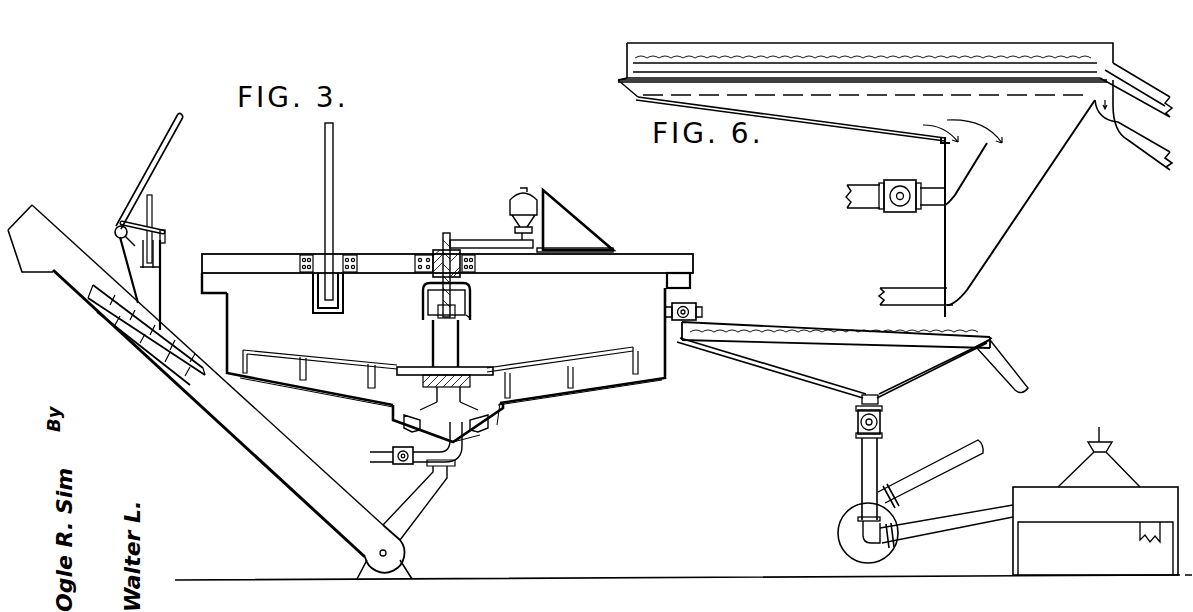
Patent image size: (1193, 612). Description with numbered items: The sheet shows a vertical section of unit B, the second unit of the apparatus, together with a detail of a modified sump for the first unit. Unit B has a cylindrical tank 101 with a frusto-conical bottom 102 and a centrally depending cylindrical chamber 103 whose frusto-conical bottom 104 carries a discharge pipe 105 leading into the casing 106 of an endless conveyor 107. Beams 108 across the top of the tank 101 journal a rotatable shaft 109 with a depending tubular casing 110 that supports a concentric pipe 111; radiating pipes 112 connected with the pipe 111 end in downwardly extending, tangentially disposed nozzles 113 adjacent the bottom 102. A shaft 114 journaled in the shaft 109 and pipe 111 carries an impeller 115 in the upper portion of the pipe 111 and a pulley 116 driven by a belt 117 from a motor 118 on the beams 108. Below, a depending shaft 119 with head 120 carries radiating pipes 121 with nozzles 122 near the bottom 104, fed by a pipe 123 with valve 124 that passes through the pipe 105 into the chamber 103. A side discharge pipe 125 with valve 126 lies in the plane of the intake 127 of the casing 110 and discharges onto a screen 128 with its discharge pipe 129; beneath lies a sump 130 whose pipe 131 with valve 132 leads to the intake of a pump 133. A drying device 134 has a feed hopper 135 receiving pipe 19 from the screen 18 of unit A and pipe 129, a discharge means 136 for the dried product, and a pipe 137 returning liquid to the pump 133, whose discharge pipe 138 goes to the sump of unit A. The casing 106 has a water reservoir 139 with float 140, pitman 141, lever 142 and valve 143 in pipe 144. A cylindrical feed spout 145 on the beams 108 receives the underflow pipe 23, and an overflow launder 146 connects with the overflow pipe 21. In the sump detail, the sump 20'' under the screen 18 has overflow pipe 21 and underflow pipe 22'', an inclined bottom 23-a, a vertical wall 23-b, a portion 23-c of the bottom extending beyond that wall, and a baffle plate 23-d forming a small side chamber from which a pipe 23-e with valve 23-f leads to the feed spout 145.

In FIG. 6, the screen 18 is at (882, 58).
In FIG. 6, the discharge pipe 19 is at (1147, 85).
In FIG. 6, the overflow discharge pipe 21 is at (1138, 143).
In FIG. 6, the sump 20'' is at (1021, 202).
In FIG. 6, the underflow discharge pipe 22'' is at (895, 297).
In FIG. 6, the downwardly inclined bottom 23-a is at (830, 122).
In FIG. 6, the vertical wall 23-b is at (943, 155).
In FIG. 6, the extending portion of the bottom 23-c is at (962, 141).
In FIG. 6, the baffle plate 23-d is at (973, 175).
In FIG. 6, the pipe 23-e is at (848, 193).
In FIG. 6, the valve 23-f is at (900, 212).
In FIG. 3, the underflow pipe 23 is at (323, 160).
In FIG. 3, the unit B is at (411, 197).
In FIG. 3, the cylindrical tank 101 is at (446, 346).
In FIG. 3, the frusto-conical bottom 102 is at (602, 390).
In FIG. 3, the depending cylindrical chamber 103 is at (500, 413).
In FIG. 3, the frusto-conical bottom 104 is at (480, 435).
In FIG. 3, the discharge pipe 105 is at (450, 483).
In FIG. 3, the casing 106 is at (263, 463).
In FIG. 3, the endless conveyor 107 is at (157, 367).
In FIG. 3, the beams 108 is at (640, 255).
In FIG. 3, the rotatable shaft 109 is at (462, 283).
In FIG. 3, the depending tubular casing 110 is at (427, 307).
In FIG. 3, the depending concentric pipe 111 is at (433, 340).
In FIG. 3, the radiating pipes 112 is at (553, 362).
In FIG. 3, the nozzles 113 is at (368, 383).
In FIG. 3, the shaft 114 is at (445, 232).
In FIG. 3, the impeller 115 is at (446, 320).
In FIG. 3, the pulley 116 is at (440, 240).
In FIG. 3, the belt 117 is at (482, 240).
In FIG. 3, the motor 118 is at (523, 190).
In FIG. 3, the depending shaft 119 is at (460, 393).
In FIG. 3, the head 120 is at (427, 402).
In FIG. 3, the radiating pipes 121 is at (397, 412).
In FIG. 3, the nozzles 122 is at (410, 425).
In FIG. 3, the pipe 123 is at (370, 453).
In FIG. 3, the valve 124 is at (407, 464).
In FIG. 3, the discharge pipe 125 is at (702, 309).
In FIG. 3, the valve 126 is at (688, 300).
In FIG. 3, the intake 127 is at (463, 320).
In FIG. 3, the screen 128 is at (785, 338).
In FIG. 3, the discharge pipe 129 is at (1010, 360).
In FIG. 3, the sump 130 is at (772, 372).
In FIG. 3, the discharge pipe 131 is at (862, 468).
In FIG. 3, the valve 132 is at (857, 422).
In FIG. 3, the pump 133 is at (842, 543).
In FIG. 3, the drying device 134 is at (1033, 490).
In FIG. 3, the feed hopper 135 is at (1098, 428).
In FIG. 3, the discharge means 136 is at (1148, 543).
In FIG. 3, the pipe 137 is at (967, 518).
In FIG. 3, the pipe 138 is at (955, 452).
In FIG. 3, the water reservoir 139 is at (160, 303).
In FIG. 3, the float 140 is at (152, 272).
In FIG. 3, the pitman 141 is at (150, 196).
In FIG. 3, the lever 142 is at (160, 228).
In FIG. 3, the valve 143 is at (115, 228).
In FIG. 3, the pipe 144 is at (180, 115).
In FIG. 3, the cylindrical feed spout 145 is at (313, 295).
In FIG. 3, the overflow launder 146 is at (683, 279).